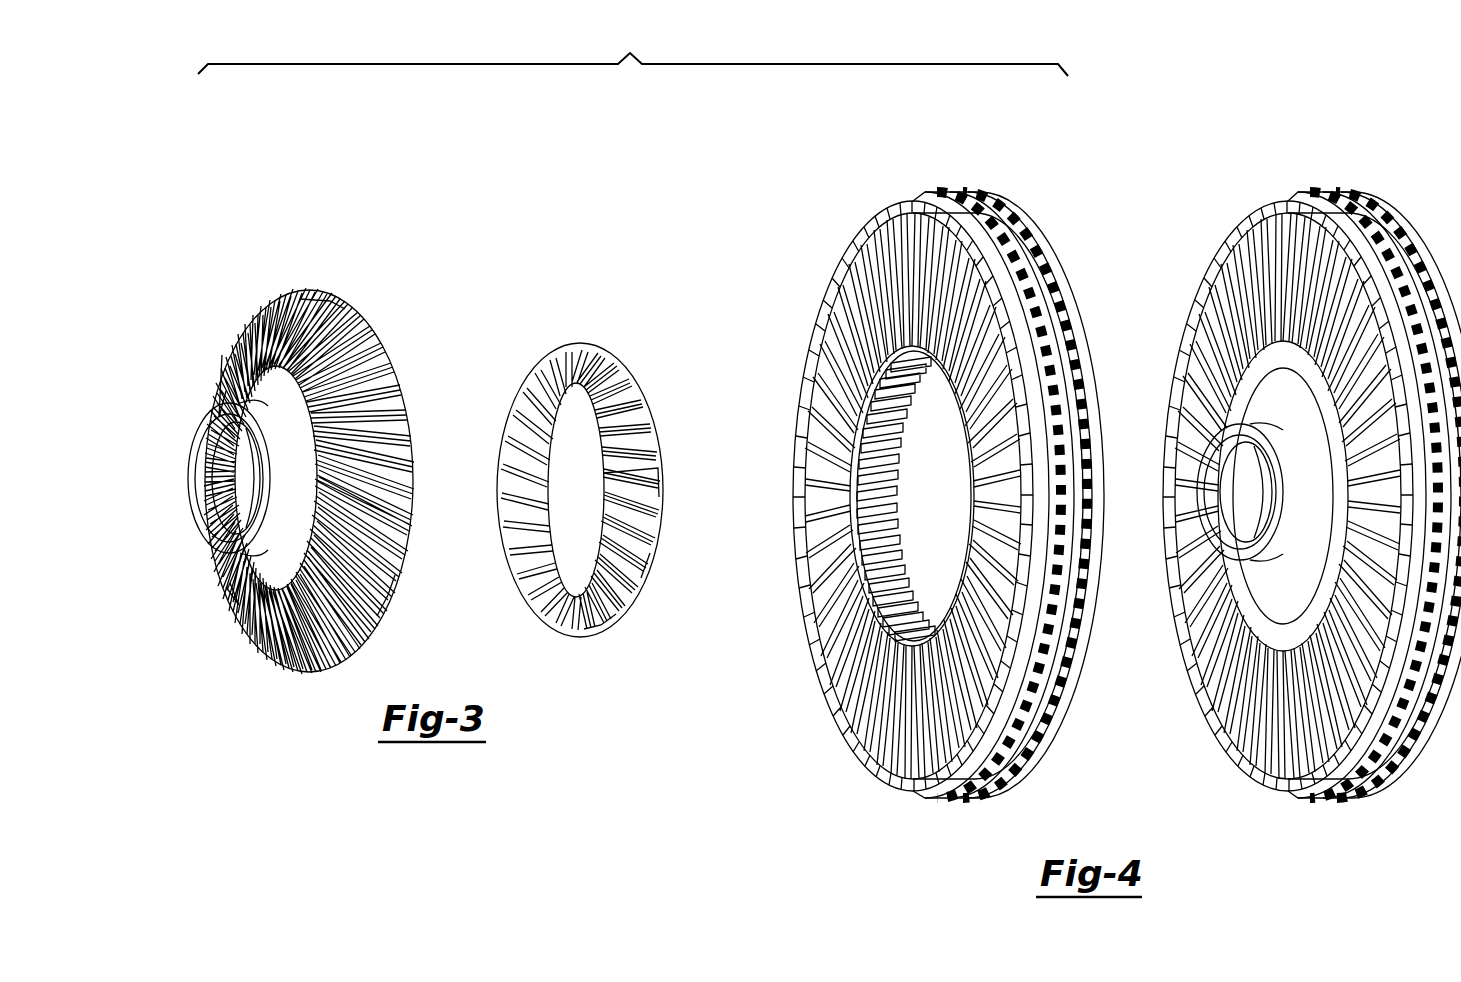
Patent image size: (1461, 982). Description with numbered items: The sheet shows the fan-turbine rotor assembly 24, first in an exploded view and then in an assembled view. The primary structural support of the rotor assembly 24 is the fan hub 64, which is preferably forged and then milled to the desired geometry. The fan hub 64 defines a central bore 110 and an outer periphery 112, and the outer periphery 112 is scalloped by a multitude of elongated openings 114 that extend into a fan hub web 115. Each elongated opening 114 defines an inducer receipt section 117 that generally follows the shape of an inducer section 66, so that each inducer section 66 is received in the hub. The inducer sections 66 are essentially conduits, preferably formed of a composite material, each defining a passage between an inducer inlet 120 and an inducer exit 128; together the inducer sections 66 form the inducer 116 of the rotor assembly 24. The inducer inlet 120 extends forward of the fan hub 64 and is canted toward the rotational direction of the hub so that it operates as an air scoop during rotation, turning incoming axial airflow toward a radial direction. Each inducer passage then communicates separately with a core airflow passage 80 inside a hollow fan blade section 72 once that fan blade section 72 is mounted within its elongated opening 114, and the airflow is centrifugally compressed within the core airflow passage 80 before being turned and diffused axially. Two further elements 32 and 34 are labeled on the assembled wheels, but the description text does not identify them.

In FIG. 3, the fan-turbine rotor assembly 24 is at (633, 50).
In FIG. 4, the fan-turbine rotor assembly 24 is at (1402, 178).
In FIG. 4, the gear wheel 32 is at (955, 464).
In FIG. 4, the gear teeth rows 34 is at (1059, 194).
In FIG. 3, the fan hub 64 is at (310, 274).
In FIG. 3, the inducer section 66 is at (642, 588).
In FIG. 4, the fan blade section 72 is at (837, 633).
In FIG. 4, the core airflow passage 80 is at (890, 468).
In FIG. 3, the bore 110 is at (200, 472).
In FIG. 3, the outer periphery 112 is at (335, 293).
In FIG. 3, the elongated openings 114 is at (395, 576).
In FIG. 3, the fan hub web 115 is at (226, 587).
In FIG. 3, the inducer 116 is at (599, 298).
In FIG. 3, the inducer receipt section 117 is at (222, 355).
In FIG. 3, the inducer inlet 120 is at (604, 478).
In FIG. 3, the inducer exit 128 is at (658, 521).